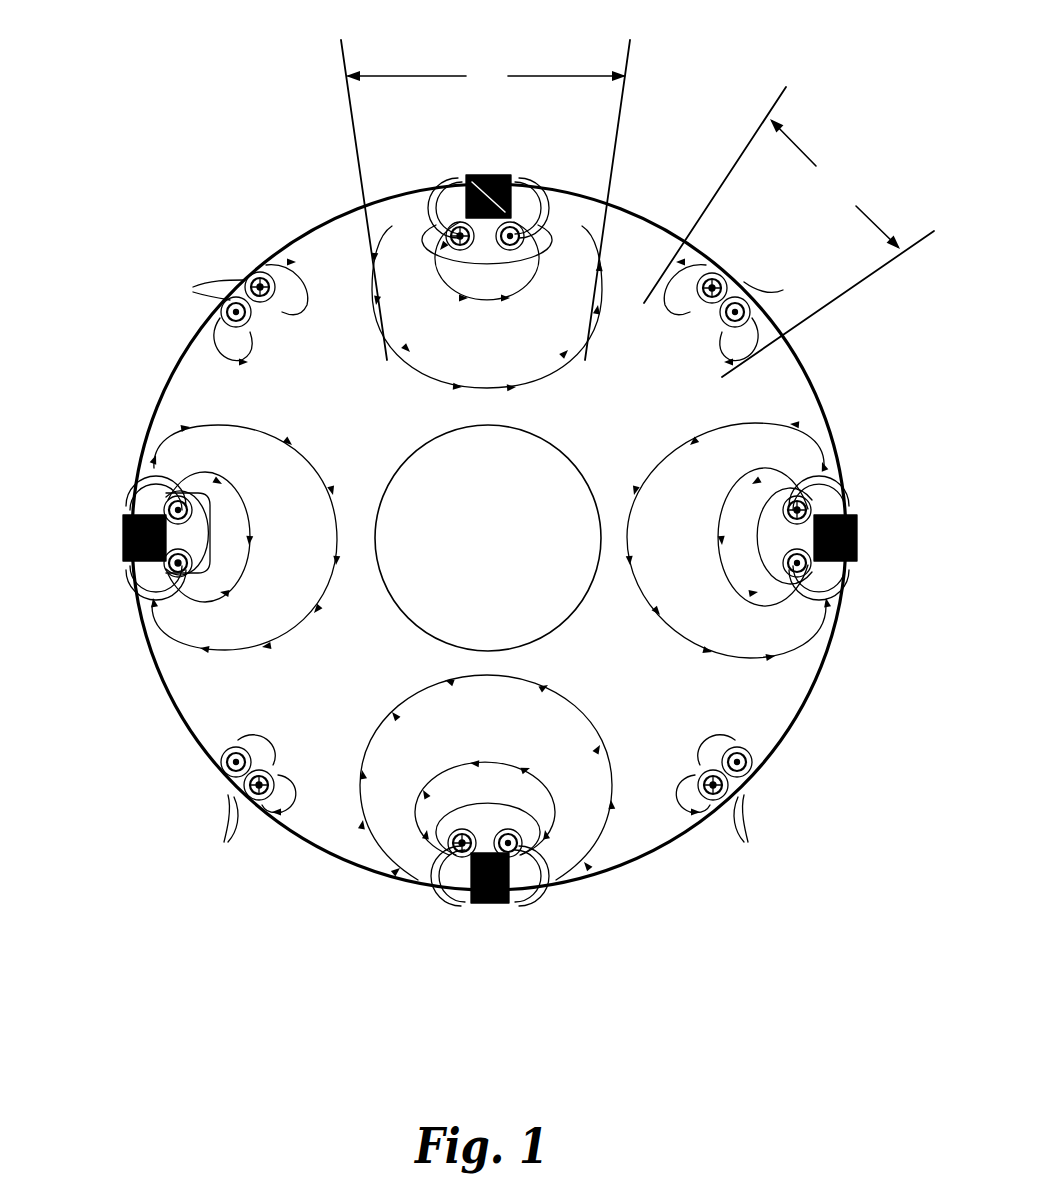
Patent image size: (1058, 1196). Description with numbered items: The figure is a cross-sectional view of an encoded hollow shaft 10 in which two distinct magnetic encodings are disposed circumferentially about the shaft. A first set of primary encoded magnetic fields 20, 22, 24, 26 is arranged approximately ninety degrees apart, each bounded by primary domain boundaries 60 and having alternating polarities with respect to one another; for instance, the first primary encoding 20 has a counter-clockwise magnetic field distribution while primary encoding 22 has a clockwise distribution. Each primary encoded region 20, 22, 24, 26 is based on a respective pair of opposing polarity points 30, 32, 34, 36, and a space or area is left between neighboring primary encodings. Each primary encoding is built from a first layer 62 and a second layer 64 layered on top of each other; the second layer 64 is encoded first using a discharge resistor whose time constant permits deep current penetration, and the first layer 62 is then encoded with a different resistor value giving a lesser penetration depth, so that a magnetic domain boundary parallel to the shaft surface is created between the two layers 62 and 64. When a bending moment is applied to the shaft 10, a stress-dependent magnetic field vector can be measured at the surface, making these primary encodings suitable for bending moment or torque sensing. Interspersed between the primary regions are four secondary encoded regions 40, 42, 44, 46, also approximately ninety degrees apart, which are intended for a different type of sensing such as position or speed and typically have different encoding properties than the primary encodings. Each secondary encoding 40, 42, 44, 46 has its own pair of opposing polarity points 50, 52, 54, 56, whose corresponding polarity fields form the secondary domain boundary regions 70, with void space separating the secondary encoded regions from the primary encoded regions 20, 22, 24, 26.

The encoded hollow shaft 10 is at (747, 37).
The primary encoded magnetic field 20 is at (523, 168).
The primary encoded magnetic field 22 is at (847, 462).
The primary encoded magnetic field 24 is at (500, 929).
The primary encoded magnetic field 26 is at (127, 462).
The opposing polarity points 30 is at (455, 244).
The opposing polarity points 32 is at (792, 508).
The opposing polarity points 34 is at (460, 830).
The opposing polarity points 36 is at (183, 508).
The secondary encoded magnetic region 40 is at (756, 272).
The secondary encoded magnetic region 42 is at (770, 807).
The secondary encoded magnetic region 44 is at (202, 807).
The secondary encoded magnetic region 46 is at (217, 276).
The opposing polarity points 50 is at (780, 288).
The opposing polarity points 52 is at (757, 830).
The opposing polarity points 54 is at (217, 830).
The opposing polarity points 56 is at (201, 288).
The primary domain boundaries 60 is at (485, 200).
The first layer 62 is at (476, 193).
The second layer 64 is at (400, 216).
The secondary domain boundary regions 70 is at (789, 232).